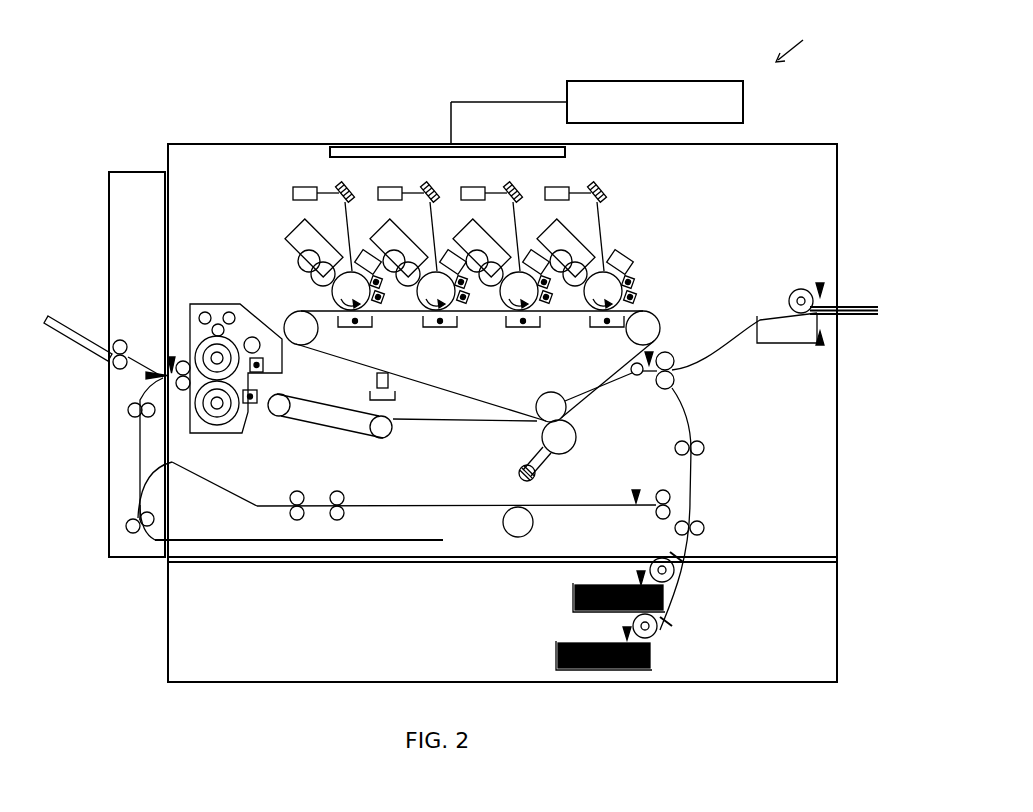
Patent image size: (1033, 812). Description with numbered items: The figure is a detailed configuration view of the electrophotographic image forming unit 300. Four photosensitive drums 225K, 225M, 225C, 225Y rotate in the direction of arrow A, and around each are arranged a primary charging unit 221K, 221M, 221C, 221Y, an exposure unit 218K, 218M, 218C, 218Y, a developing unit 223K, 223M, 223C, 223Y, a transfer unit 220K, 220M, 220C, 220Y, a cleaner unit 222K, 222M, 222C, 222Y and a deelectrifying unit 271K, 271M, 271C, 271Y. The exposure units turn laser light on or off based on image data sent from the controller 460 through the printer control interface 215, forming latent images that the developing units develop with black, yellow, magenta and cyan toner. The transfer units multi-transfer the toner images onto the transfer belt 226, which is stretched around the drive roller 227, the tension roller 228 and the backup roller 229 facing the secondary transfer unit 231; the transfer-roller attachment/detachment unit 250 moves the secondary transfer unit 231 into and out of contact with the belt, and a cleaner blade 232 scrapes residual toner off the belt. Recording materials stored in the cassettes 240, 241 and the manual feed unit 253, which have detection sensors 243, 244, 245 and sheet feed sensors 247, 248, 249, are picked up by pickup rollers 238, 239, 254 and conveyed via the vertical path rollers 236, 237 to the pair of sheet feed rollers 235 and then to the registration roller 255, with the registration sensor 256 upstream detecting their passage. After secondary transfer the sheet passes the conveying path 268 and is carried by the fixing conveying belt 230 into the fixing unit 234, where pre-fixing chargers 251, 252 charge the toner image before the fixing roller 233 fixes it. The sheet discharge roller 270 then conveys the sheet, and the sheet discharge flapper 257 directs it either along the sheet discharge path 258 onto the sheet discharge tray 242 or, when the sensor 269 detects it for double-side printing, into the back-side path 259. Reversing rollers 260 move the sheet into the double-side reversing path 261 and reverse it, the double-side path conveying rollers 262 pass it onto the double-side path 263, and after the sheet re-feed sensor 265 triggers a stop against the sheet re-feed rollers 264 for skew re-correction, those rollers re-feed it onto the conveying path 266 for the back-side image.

The image forming unit 300 is at (815, 31).
The controller 460 is at (662, 81).
The printer control interface (I/F) 215 is at (395, 146).
The exposure unit 218K is at (297, 186).
The exposure unit 218M is at (396, 187).
The exposure unit 218C is at (476, 186).
The exposure unit 218Y is at (563, 187).
The primary charging unit 221K is at (357, 257).
The primary charging unit 221M is at (450, 258).
The primary charging unit 221C is at (533, 258).
The primary charging unit 221Y is at (622, 253).
The developing unit 223K is at (292, 238).
The developing unit 223M is at (388, 226).
The developing unit 223C is at (470, 237).
The developing unit 223Y is at (556, 238).
The photosensitive drum (photosensitive member) 225K is at (332, 291).
The photosensitive drum (photosensitive member) 225M is at (428, 313).
The photosensitive drum (photosensitive member) 225C is at (510, 313).
The photosensitive drum (photosensitive member) 225Y is at (623, 280).
The deelectrifying unit 271K is at (374, 300).
The deelectrifying unit 271M is at (464, 302).
The deelectrifying unit 271C is at (549, 302).
The deelectrifying unit 271Y is at (634, 287).
The cleaner unit 222K is at (365, 328).
The cleaner unit 222M is at (467, 328).
The cleaner unit 222C is at (518, 330).
The cleaner unit 222Y is at (633, 300).
The transfer unit 220K is at (318, 265).
The transfer unit 220M is at (425, 273).
The transfer unit 220C is at (525, 273).
The transfer unit 220Y is at (612, 243).
The transfer belt 226 is at (425, 388).
The roller (drive roller) 227 is at (288, 320).
The roller (tension roller) 228 is at (661, 327).
The roller (backup roller) 229 is at (563, 411).
The secondary transfer unit 231 is at (576, 445).
The conveying path 268 is at (455, 423).
The transfer-roller attachment/detachment unit 250 is at (519, 477).
The registration roller 255 is at (635, 377).
The registration sensor 256 is at (667, 350).
The pair of sheet feed rollers 235 is at (677, 373).
The detection sensor 245 is at (822, 346).
The manual feed unit 253 is at (850, 318).
The sheet feed sensor 249 is at (820, 282).
The pickup roller 254 is at (790, 294).
The conveying path 266 is at (691, 412).
The pair of vertical path rollers 236 is at (703, 455).
The pair of vertical path rollers 237 is at (703, 533).
The sheet feed sensor 247 is at (670, 553).
The sheet feed sensor 248 is at (678, 620).
The pickup roller 238 is at (683, 573).
The pickup roller 239 is at (656, 637).
The detection sensor 243 is at (633, 575).
The detection sensor 244 is at (620, 631).
The cassette 240 is at (573, 598).
The cassette 241 is at (556, 655).
The sheet re-feed rollers 264 is at (655, 512).
The sheet re-feed sensor 265 is at (630, 494).
The fixing unit 234 is at (251, 350).
The fixing roller 233 is at (220, 415).
The pre-fixing charger 251 is at (262, 372).
The pre-fixing charger 252 is at (256, 404).
The sensor 269 is at (177, 322).
The sheet discharge path 258 is at (158, 370).
The sheet discharge tray 242 is at (62, 318).
The sheet discharge roller 270 is at (117, 367).
The sheet discharge flapper 257 is at (118, 393).
The back-side path 259 is at (130, 412).
The reversing rollers 260 is at (132, 522).
The double-side path 263 is at (455, 540).
The double-side path conveying rollers 262 is at (344, 519).
The double-side reversing path 261 is at (288, 562).
The fixing conveying belt 230 is at (322, 416).
The cleaner blade 232 is at (377, 386).